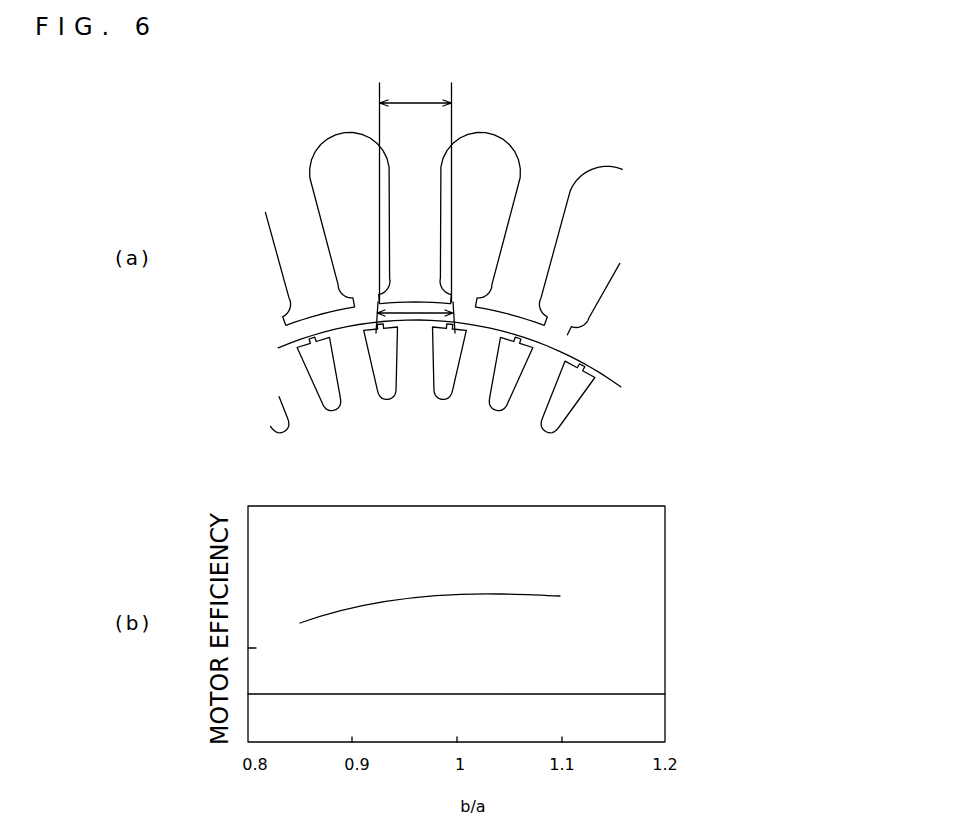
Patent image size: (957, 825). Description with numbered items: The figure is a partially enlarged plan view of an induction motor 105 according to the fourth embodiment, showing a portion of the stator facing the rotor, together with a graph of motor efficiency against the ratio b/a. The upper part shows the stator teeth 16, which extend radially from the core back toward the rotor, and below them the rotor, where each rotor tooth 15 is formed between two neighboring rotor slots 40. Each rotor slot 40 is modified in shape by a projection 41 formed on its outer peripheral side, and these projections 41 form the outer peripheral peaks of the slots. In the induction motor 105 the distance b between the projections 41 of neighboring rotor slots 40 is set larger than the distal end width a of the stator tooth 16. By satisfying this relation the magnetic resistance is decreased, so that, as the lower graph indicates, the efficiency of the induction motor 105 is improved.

The induction motor 105 is at (233, 126).
The rotor tooth 15 is at (542, 363).
The stator tooth 16 is at (535, 242).
The rotor slot 40 is at (573, 395).
The projection 41 is at (530, 335).